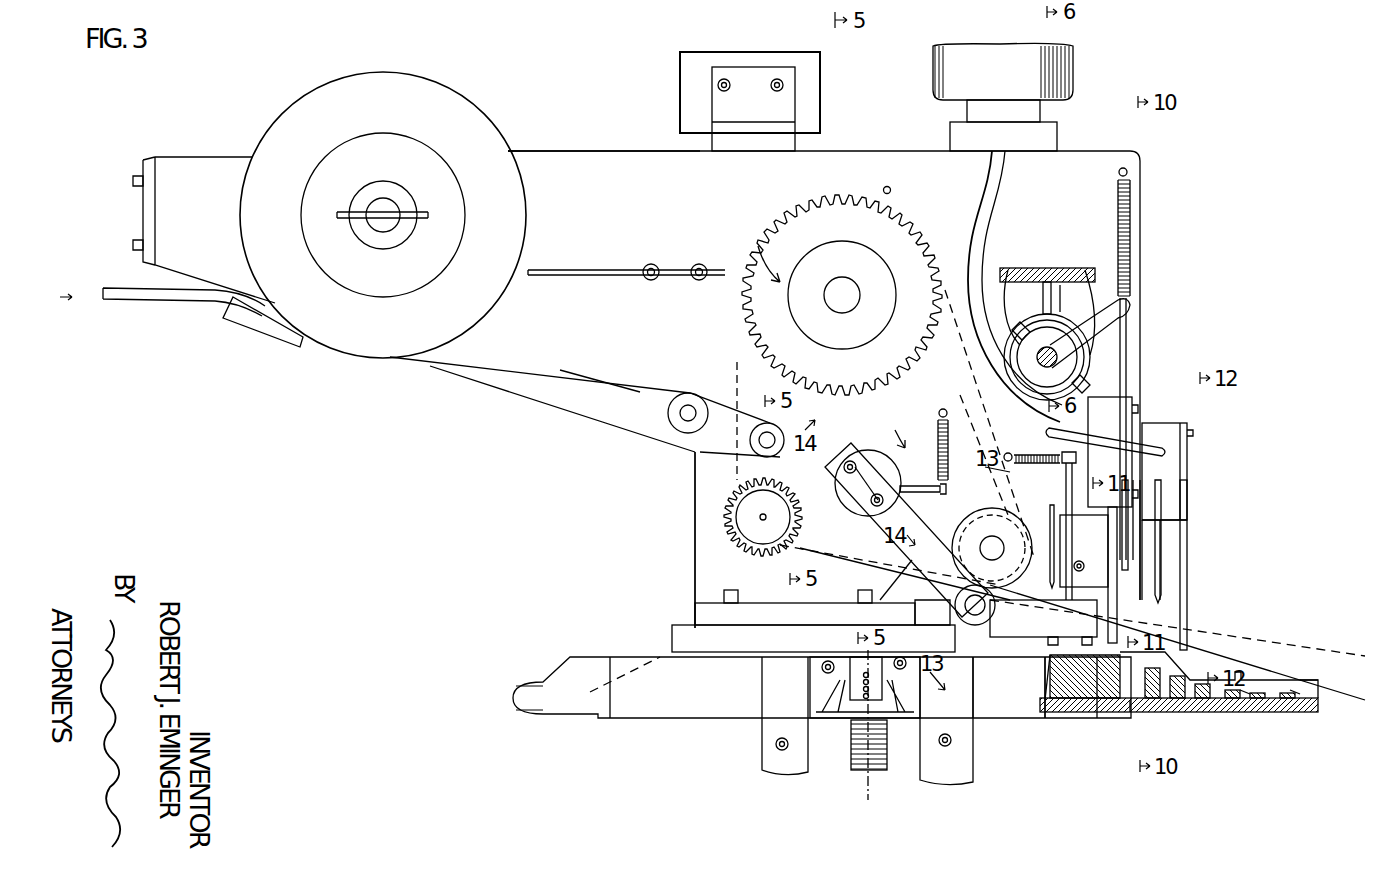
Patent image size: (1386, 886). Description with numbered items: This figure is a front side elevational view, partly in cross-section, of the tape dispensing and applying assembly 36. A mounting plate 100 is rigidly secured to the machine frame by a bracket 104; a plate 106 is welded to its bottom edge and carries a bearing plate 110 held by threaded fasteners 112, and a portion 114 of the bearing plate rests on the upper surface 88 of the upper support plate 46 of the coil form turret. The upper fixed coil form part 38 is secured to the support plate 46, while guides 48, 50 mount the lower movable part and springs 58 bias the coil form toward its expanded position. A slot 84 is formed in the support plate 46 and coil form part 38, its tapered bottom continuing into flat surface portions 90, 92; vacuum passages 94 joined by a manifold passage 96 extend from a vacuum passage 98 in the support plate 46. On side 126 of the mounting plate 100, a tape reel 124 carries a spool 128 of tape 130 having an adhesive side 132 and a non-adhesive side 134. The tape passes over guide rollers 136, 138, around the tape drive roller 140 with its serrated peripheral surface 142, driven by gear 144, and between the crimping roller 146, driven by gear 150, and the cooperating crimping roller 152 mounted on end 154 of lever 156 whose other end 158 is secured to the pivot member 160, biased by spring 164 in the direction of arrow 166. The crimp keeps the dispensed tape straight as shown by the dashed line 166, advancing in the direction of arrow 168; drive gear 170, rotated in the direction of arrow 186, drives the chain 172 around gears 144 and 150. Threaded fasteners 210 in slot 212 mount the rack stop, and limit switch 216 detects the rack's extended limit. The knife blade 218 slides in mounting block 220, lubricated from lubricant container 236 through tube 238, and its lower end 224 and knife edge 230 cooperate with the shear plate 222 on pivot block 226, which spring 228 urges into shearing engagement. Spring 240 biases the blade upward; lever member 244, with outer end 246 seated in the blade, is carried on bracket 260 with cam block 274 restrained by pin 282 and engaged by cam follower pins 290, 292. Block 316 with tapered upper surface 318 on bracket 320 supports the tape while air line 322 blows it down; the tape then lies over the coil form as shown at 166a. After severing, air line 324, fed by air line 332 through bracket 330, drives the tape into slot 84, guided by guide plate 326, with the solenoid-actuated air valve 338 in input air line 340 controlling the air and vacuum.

The tape dispensing and applying assembly 36 is at (647, 120).
The upper fixed coil form part 38 is at (814, 689).
The upper support plate 46 is at (652, 720).
The guide 48 is at (756, 717).
The guide 50 is at (975, 763).
The spring 58 is at (852, 772).
The slot 84 is at (862, 662).
The upper surface 88 is at (666, 654).
The flat longitudinally extending surface portion 90 is at (1250, 695).
The flat longitudinally extending surface portion 92 is at (1297, 696).
The vacuum passages 94 is at (882, 684).
The manifold passage 96 is at (1225, 700).
The vacuum passage 98 is at (1098, 712).
The mounting plate 100 is at (666, 200).
The bracket 104 is at (142, 198).
The plate 106 is at (692, 605).
The bearing plate 110 is at (690, 625).
The threaded fasteners 112 is at (730, 585).
The portion 114 is at (802, 628).
The tape reel 124 is at (402, 290).
The side 126 is at (583, 152).
The spool 128 is at (407, 118).
The tape 130 is at (492, 360).
The adhesive side 132 is at (560, 375).
The non-adhesive side 134 is at (540, 378).
The guide roller 136 is at (668, 418).
The guide roller 138 is at (750, 440).
The tape drive roller 140 is at (752, 505).
The serrated peripheral surface 142 is at (727, 517).
The gear 144 is at (798, 500).
The tape crimping roller 146 is at (978, 530).
The gear 150 is at (966, 444).
The cooperating crimping roller 152 is at (996, 620).
The end of lever 154 is at (921, 595).
The lever 156 is at (895, 560).
The other end of lever 158 is at (850, 445).
The pivot member 160 is at (896, 465).
The spring 164 is at (915, 430).
The arrow / dispensed length of tape 166 is at (900, 460).
The dispensed tape in solid lines 166a is at (1298, 678).
The arrow 168 is at (842, 562).
The drive gear 170 is at (868, 240).
The drive chain 172 is at (842, 300).
The arrow 186 is at (778, 238).
The threaded fasteners 210 is at (699, 264).
The slot 212 is at (567, 270).
The limit switch 216 is at (808, 83).
The knife blade 218 is at (1128, 339).
The mounting block 220 is at (1110, 400).
The shear plate 222 is at (1140, 560).
The lower end of knife blade 224 is at (1120, 515).
The pivot block / opening 226 is at (1130, 540).
The spring 228 is at (1039, 469).
The knife edge 230 is at (1143, 602).
The lubricant container 236 is at (1072, 62).
The lubricant-supplying tube 238 is at (1002, 189).
The spring 240 is at (1132, 197).
The lever member 244 is at (1100, 294).
The outer end of lever member 246 is at (1135, 309).
The bracket 260 is at (1046, 266).
The cam block 274 is at (1040, 328).
The pin 282 is at (1081, 299).
The cam follower pin 290 is at (1010, 273).
The cam follower pin 292 is at (1085, 372).
The block 316 is at (1048, 640).
The tapered upper surface 318 is at (1060, 640).
The bracket 320 is at (1072, 708).
The air line 322 is at (1081, 526).
The air line 324 is at (1163, 575).
The guide plate 326 is at (1187, 485).
The bracket 330 is at (1188, 441).
The air line 332 is at (1110, 438).
The solenoid-actuated air valve 338 is at (262, 330).
The input air line 340 is at (172, 300).